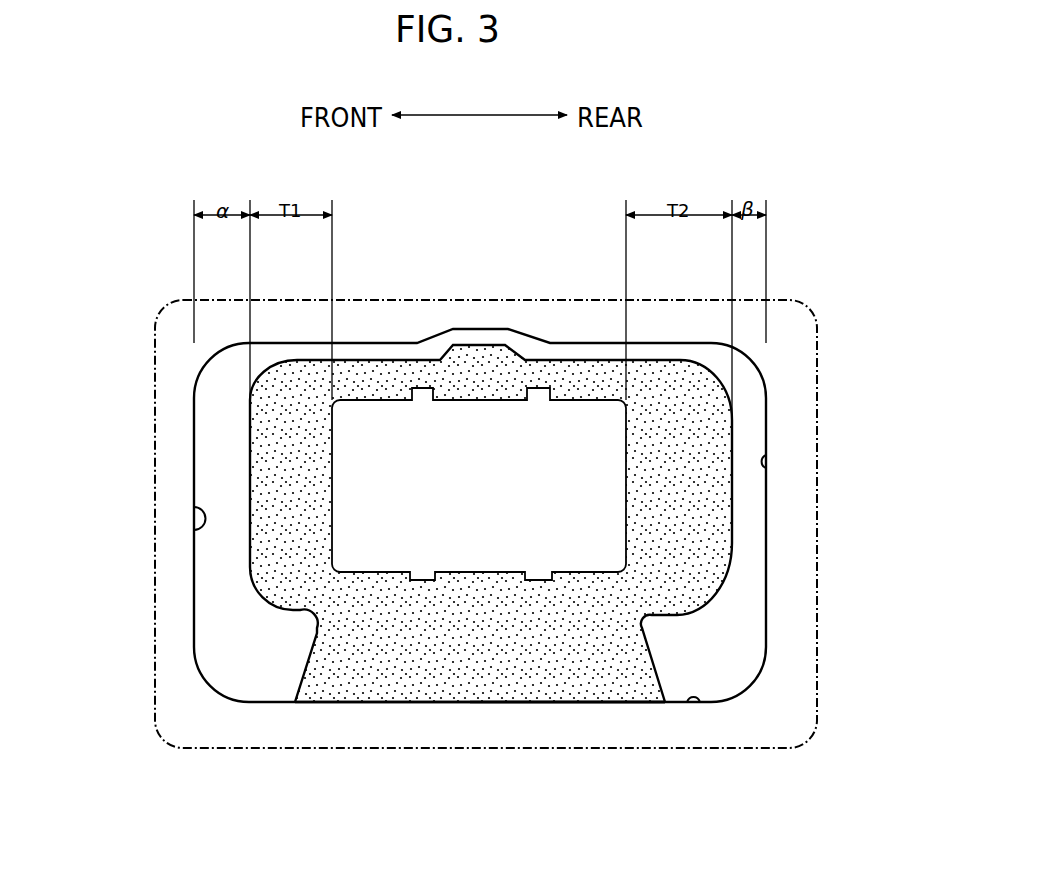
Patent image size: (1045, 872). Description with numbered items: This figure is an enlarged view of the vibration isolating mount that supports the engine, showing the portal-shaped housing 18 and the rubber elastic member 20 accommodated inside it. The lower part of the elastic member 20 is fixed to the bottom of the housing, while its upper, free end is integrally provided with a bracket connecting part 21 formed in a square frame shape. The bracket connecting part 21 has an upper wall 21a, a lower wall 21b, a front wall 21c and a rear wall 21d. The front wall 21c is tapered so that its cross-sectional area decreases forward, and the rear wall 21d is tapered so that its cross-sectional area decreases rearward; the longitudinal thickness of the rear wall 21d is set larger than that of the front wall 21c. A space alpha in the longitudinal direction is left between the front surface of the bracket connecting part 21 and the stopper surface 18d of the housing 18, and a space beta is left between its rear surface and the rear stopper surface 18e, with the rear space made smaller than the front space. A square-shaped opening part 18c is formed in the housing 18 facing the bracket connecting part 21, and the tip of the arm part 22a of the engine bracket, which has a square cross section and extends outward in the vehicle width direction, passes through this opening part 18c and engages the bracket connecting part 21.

The housing 18 is at (153, 380).
The opening part 18c is at (697, 700).
The stopper surface 18d is at (193, 528).
The rear stopper surface 18e is at (767, 457).
The elastic member 20 is at (517, 680).
The bracket connecting part 21 is at (552, 346).
The upper wall 21a is at (407, 372).
The lower wall 21b is at (480, 582).
The front wall 21c is at (272, 538).
The rear wall 21d is at (693, 528).
The arm part 22a is at (390, 575).